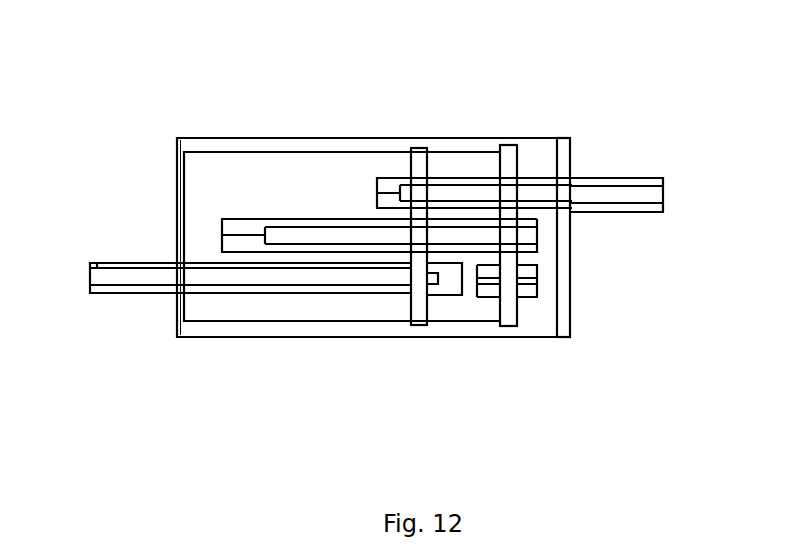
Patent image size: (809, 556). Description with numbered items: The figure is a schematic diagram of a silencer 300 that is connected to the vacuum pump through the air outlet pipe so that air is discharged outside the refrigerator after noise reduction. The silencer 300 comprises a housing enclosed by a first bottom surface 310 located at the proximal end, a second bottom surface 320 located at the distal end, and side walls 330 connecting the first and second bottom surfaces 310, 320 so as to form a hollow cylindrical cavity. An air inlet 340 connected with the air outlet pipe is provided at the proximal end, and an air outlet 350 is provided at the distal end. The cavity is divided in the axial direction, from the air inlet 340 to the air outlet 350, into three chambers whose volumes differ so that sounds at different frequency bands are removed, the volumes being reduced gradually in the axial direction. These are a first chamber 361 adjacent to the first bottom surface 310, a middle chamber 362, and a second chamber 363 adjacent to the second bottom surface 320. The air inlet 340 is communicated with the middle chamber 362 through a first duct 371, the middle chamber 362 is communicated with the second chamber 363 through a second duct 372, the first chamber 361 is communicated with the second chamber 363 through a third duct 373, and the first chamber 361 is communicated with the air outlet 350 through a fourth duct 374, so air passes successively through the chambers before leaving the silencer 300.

The silencer 300 is at (777, 58).
The first bottom surface 310 is at (180, 187).
The second bottom surface 320 is at (560, 258).
The side walls 330 is at (325, 140).
The air inlet 340 is at (95, 262).
The air outlet 350 is at (660, 182).
The first chamber 361 is at (240, 160).
The middle chamber 362 is at (460, 167).
The second chamber 363 is at (538, 153).
The first duct 371 is at (226, 283).
The second duct 372 is at (491, 280).
The third duct 373 is at (318, 245).
The fourth duct 374 is at (583, 198).